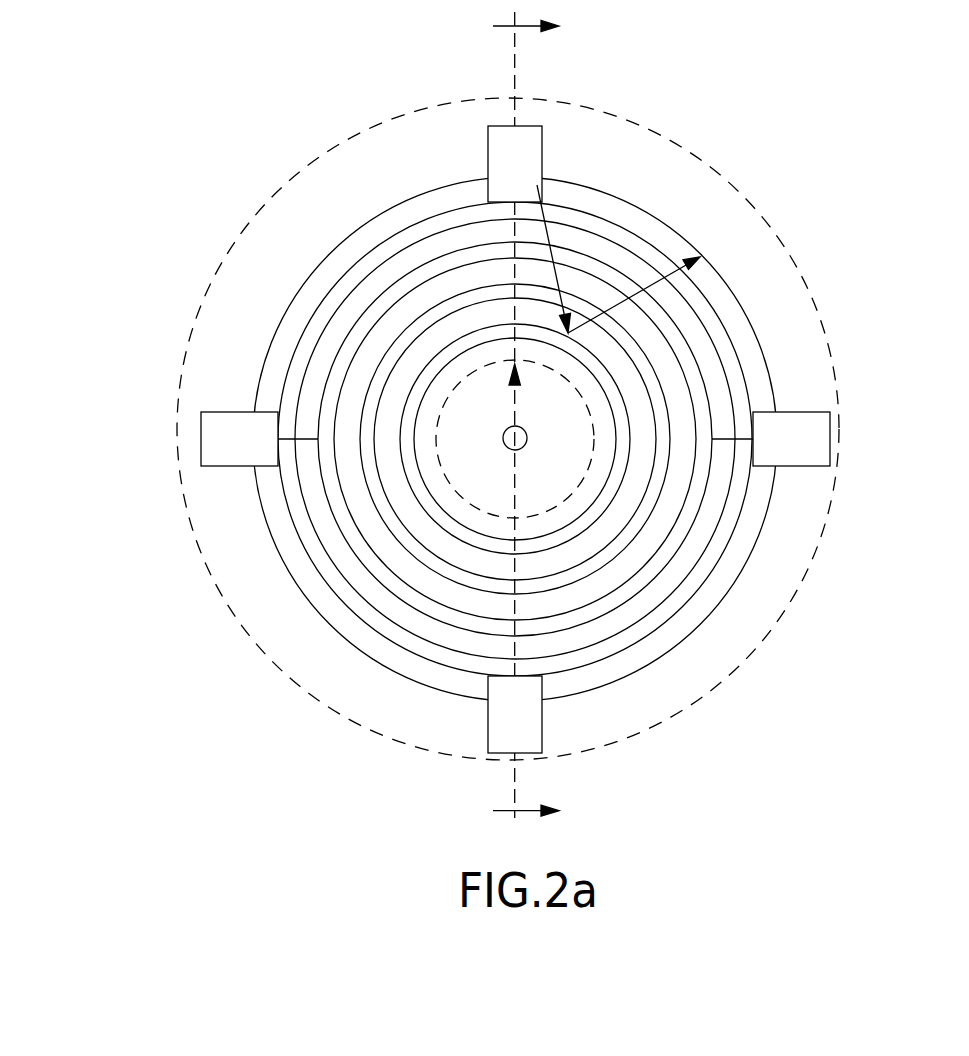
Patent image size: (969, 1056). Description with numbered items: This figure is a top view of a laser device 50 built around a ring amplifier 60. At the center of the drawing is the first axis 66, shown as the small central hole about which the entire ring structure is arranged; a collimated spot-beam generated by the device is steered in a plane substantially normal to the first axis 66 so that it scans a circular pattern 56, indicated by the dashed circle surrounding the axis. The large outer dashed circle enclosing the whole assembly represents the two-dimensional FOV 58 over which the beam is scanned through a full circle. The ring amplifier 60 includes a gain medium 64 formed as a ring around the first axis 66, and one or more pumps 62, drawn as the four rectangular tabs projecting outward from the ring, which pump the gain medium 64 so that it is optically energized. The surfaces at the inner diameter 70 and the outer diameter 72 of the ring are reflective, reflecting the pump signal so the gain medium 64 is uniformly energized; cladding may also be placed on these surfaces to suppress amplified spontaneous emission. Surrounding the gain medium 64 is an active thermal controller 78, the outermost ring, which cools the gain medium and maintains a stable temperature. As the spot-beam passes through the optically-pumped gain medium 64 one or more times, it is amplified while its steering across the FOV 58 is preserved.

The laser device 50 is at (116, 128).
The circular pattern 56 is at (514, 405).
The 2D FOV 58 is at (268, 202).
The ring amplifier 60 is at (275, 333).
The pump 62 is at (487, 131).
The gain medium 64 is at (407, 282).
The first axis 66 is at (513, 450).
The inner diameter surface 70 is at (413, 478).
The outer diameter surface 72 is at (317, 570).
The active thermal controller 78 is at (340, 637).